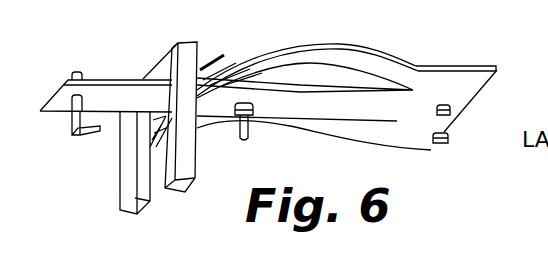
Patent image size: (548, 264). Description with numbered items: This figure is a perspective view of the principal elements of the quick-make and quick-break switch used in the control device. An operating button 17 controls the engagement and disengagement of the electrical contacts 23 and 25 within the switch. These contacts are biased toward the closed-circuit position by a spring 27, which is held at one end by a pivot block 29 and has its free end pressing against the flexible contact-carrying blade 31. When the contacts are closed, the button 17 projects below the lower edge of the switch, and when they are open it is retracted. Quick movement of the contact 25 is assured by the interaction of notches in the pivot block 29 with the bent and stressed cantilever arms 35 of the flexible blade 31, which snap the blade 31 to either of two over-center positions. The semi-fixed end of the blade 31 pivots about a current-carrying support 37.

The operating button 17 is at (238, 131).
The electrical contact 23 is at (440, 145).
The electrical contact 25 is at (450, 110).
The spring 27 is at (203, 62).
The pivot block 29 is at (166, 61).
The flexible contact-carrying blade 31 is at (468, 68).
The cantilever arms 35 is at (356, 50).
The current-carrying support 37 is at (82, 138).